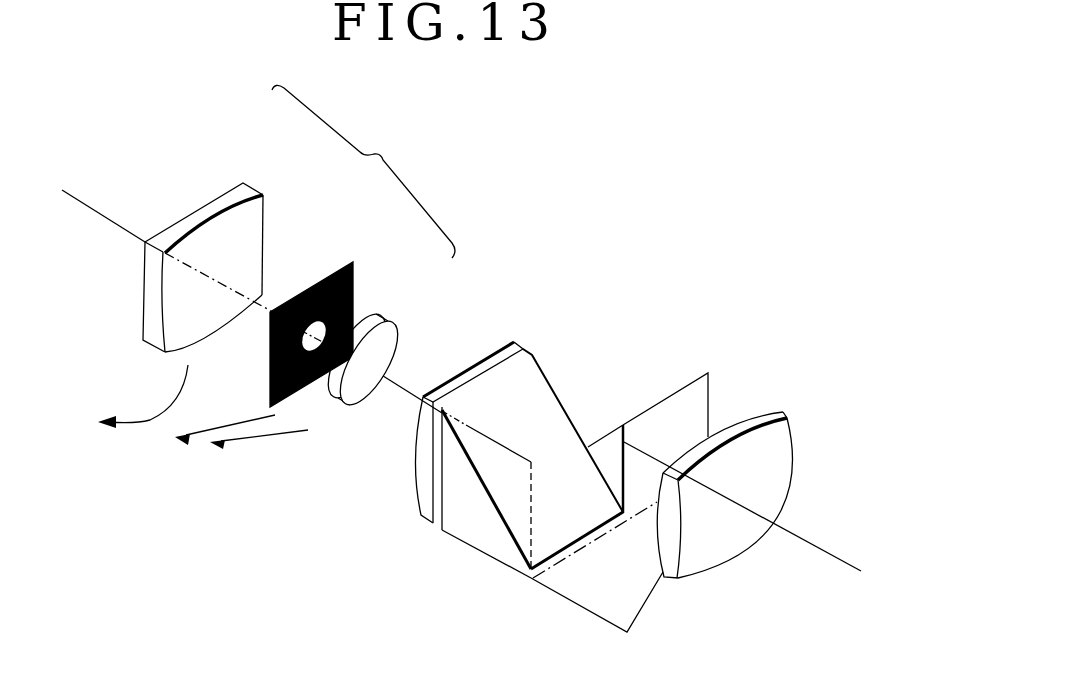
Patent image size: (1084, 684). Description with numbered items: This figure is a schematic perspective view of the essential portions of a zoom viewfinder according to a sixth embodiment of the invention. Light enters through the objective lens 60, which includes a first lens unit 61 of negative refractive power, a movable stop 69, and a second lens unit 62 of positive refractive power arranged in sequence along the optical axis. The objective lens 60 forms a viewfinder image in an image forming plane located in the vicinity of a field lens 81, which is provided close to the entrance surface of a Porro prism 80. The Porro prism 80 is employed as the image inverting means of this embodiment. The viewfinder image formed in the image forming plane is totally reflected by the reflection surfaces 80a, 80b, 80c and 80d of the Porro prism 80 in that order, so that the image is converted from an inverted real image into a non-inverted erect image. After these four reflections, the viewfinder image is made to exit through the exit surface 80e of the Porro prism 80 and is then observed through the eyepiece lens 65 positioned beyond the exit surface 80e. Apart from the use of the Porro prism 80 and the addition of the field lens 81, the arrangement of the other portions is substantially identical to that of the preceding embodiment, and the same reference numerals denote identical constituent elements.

The objective lens 60 is at (363, 171).
The first lens unit 61 is at (253, 222).
The second lens unit 62 is at (377, 343).
The eyepiece lens 65 is at (793, 461).
The movable stop 69 is at (325, 273).
The Porro prism 80 is at (578, 247).
The reflection surface 80a is at (533, 400).
The reflection surface 80b is at (472, 547).
The reflection surface 80c is at (650, 600).
The reflection surface 80d is at (598, 443).
The exit surface 80e is at (708, 395).
The field lens 81 is at (484, 350).